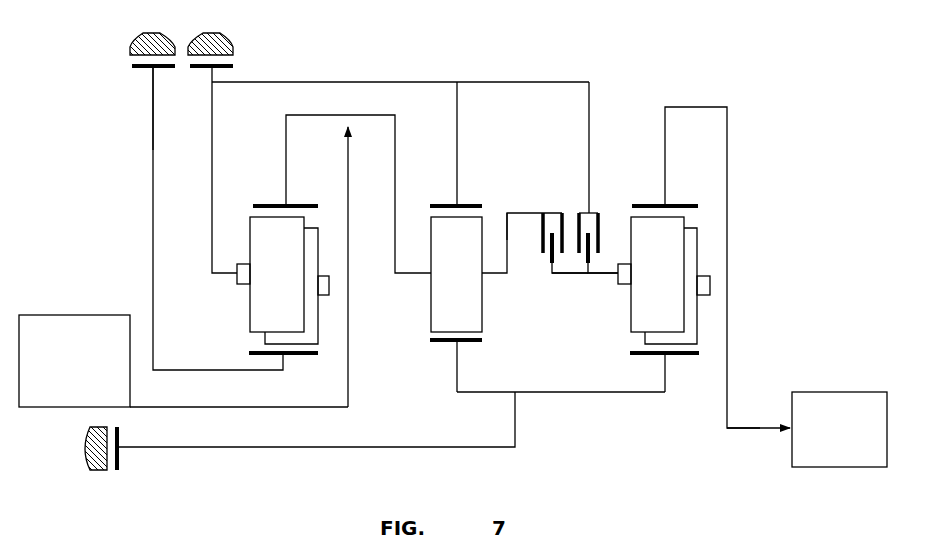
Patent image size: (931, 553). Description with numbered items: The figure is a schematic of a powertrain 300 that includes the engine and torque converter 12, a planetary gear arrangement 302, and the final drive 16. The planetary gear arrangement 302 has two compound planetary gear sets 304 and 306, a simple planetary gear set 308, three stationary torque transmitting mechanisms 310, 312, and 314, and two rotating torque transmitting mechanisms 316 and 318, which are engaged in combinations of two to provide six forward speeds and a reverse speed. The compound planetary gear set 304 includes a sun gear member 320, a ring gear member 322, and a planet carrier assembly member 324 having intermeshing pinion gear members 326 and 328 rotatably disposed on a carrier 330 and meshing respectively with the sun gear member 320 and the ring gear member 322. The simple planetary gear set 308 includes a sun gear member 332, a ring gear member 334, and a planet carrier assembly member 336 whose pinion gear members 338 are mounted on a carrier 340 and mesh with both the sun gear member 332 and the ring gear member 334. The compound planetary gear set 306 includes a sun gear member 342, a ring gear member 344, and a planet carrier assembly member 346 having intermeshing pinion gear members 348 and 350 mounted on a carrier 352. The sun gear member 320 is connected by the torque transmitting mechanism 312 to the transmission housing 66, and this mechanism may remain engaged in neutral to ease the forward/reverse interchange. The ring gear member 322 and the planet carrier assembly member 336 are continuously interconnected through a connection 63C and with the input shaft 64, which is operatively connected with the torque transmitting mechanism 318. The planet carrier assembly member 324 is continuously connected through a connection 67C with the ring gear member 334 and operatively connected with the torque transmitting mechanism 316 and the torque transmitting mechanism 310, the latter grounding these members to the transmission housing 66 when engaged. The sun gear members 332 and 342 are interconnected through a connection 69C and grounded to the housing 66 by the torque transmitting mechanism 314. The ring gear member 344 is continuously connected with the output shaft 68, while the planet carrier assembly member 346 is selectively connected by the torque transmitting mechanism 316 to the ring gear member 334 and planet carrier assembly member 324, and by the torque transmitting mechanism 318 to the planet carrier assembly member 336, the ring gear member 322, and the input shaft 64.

The transmission housing 66 is at (128, 45).
The stationary torque transmitting mechanism 312 is at (130, 63).
The stationary torque transmitting mechanism 310 is at (235, 62).
The connection 67C is at (320, 82).
The connection 63C is at (340, 115).
The planetary gear arrangement 302 is at (523, 74).
The powertrain 300 is at (108, 185).
The ring gear member 322 is at (268, 204).
The compound planetary gear set 304 is at (245, 302).
The pinion gear member 328 is at (293, 227).
The pinion gear member 326 is at (310, 335).
The planet carrier assembly member 324 is at (331, 263).
The carrier 330 is at (226, 276).
The sun gear member 320 is at (300, 356).
The input shaft 64 is at (238, 408).
The engine and torque converter 12 is at (72, 310).
The stationary torque transmitting mechanism 314 is at (114, 480).
The ring gear member 334 is at (445, 204).
The pinion gear member 338 is at (437, 232).
The carrier 340 is at (493, 276).
The planet carrier assembly member 336 is at (493, 219).
The rotating torque transmitting mechanism 318 is at (549, 202).
The rotating torque transmitting mechanism 316 is at (597, 203).
The carrier 352 is at (587, 276).
The sun gear member 332 is at (463, 344).
The simple planetary gear set 308 is at (419, 343).
The connection 69C is at (560, 393).
The ring gear member 344 is at (668, 204).
The pinion gear member 350 is at (670, 223).
The pinion gear member 348 is at (692, 329).
The planet carrier assembly member 346 is at (707, 260).
The sun gear member 342 is at (682, 360).
The compound planetary gear set 306 is at (703, 357).
The output shaft 68 is at (757, 430).
The final drive 16 is at (852, 390).